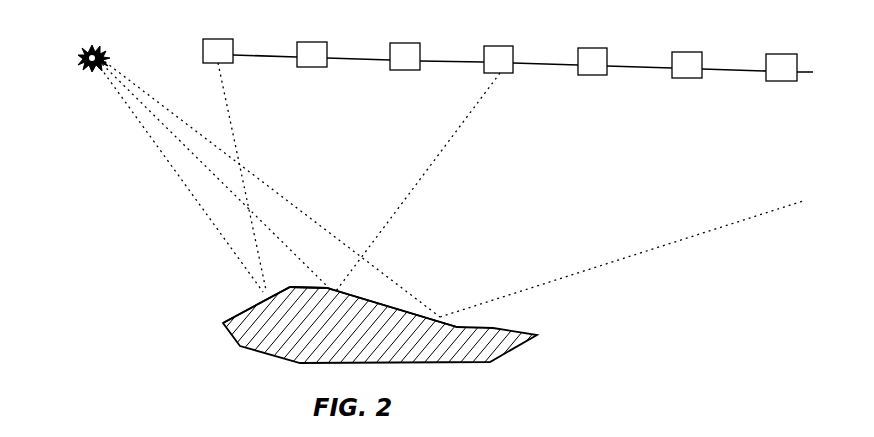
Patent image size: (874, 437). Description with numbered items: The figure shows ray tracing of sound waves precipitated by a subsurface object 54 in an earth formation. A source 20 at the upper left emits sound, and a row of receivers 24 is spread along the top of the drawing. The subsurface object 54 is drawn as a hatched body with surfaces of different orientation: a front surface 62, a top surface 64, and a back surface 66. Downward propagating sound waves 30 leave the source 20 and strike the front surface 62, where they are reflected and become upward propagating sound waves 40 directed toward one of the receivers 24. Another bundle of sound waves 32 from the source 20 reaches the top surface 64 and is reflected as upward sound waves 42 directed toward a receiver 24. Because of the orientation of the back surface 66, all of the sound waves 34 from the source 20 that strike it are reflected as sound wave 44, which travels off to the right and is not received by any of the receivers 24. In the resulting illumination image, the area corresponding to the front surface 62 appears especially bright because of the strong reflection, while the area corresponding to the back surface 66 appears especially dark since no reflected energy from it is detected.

The source 20 is at (80, 65).
The receivers 24 is at (219, 39).
The downward propagating sound waves 30 is at (145, 133).
The bundle of sound waves 32 is at (262, 216).
The sound waves 34 is at (258, 183).
The upward propagating sound waves 40 is at (240, 122).
The upward sound waves 42 is at (432, 168).
The sound wave 44 is at (621, 260).
The subsurface object 54 is at (343, 338).
The front surface 62 is at (248, 310).
The top surface 64 is at (293, 287).
The back surface 66 is at (378, 300).